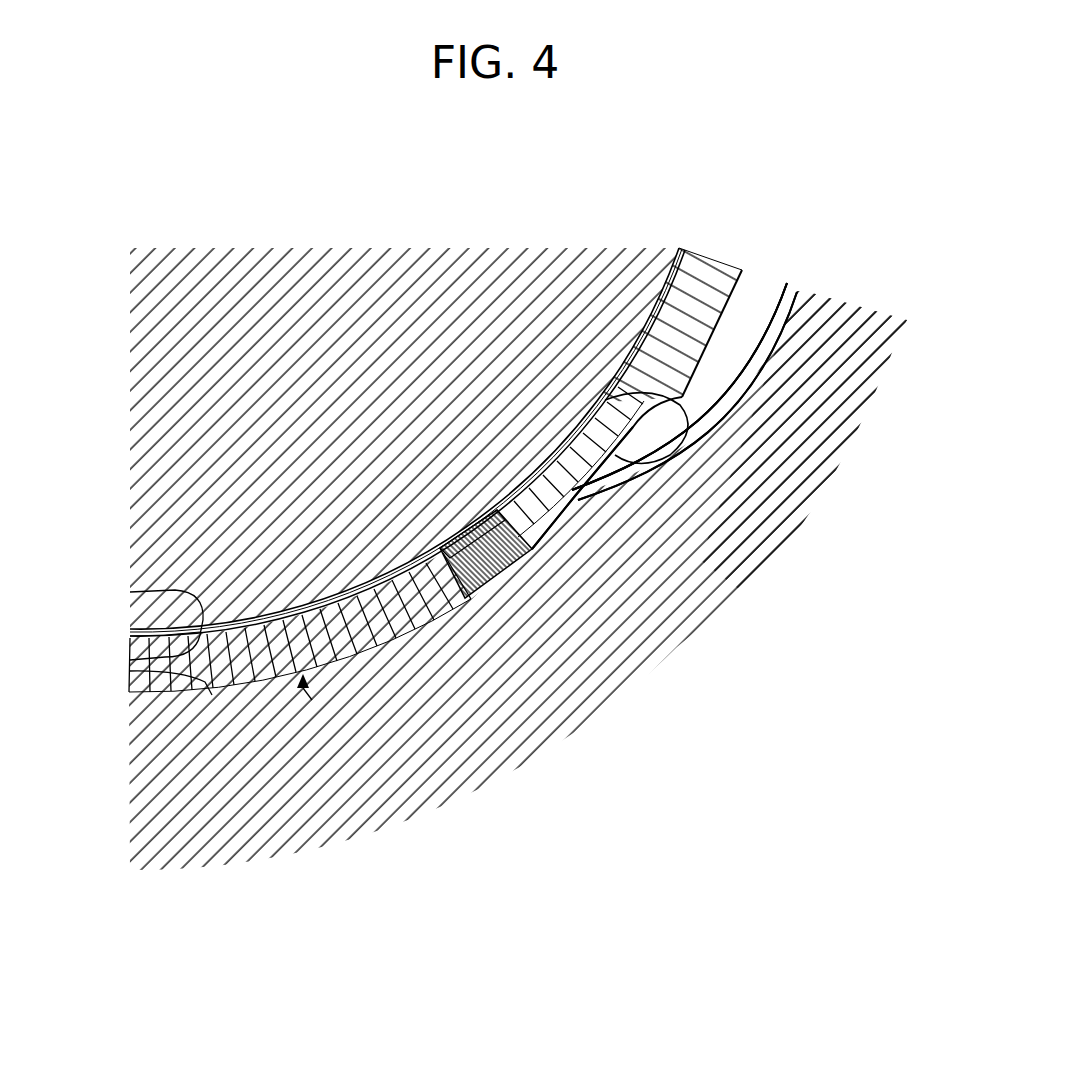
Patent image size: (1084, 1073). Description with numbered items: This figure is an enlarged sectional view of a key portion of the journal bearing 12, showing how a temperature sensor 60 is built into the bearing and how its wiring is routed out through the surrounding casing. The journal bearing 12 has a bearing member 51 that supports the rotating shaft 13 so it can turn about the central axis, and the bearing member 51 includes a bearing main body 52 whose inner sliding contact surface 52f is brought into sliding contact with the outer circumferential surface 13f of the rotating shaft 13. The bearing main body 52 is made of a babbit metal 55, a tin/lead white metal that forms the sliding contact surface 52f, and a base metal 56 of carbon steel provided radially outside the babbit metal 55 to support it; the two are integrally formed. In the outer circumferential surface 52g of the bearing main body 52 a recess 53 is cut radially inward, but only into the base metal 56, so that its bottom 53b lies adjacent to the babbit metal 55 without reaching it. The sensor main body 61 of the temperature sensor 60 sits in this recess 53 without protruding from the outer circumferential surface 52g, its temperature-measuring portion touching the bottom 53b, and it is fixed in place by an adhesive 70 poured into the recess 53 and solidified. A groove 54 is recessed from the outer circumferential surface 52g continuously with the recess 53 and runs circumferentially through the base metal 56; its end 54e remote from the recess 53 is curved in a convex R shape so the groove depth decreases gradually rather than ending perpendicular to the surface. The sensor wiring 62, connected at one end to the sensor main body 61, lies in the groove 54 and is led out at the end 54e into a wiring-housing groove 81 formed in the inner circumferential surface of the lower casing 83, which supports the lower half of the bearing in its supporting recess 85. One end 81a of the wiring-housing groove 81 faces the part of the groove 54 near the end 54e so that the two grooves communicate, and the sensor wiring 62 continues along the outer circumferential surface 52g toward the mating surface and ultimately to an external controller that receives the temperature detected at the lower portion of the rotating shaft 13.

The journal bearing 12 is at (318, 658).
The rotating shaft 13 is at (248, 603).
The outer circumferential surface 13f is at (175, 672).
The bearing member 51 is at (400, 633).
The bearing main body 52 is at (428, 640).
The sliding contact surface 52f is at (205, 612).
The outer circumferential surface 52g is at (178, 695).
The recess 53 is at (503, 590).
The bottom 53b is at (483, 512).
The groove 54 is at (557, 446).
The end 54e is at (660, 420).
The babbit metal 55 is at (690, 255).
The base metal 56 is at (738, 270).
The temperature sensor 60 is at (672, 820).
The sensor main body 61 is at (640, 467).
The sensor wiring 62 is at (690, 420).
The adhesive 70 is at (520, 577).
The wiring-housing groove 81 is at (780, 318).
The one end 81a is at (618, 492).
The lower casing 83 is at (857, 308).
The supporting recess 85 is at (210, 688).